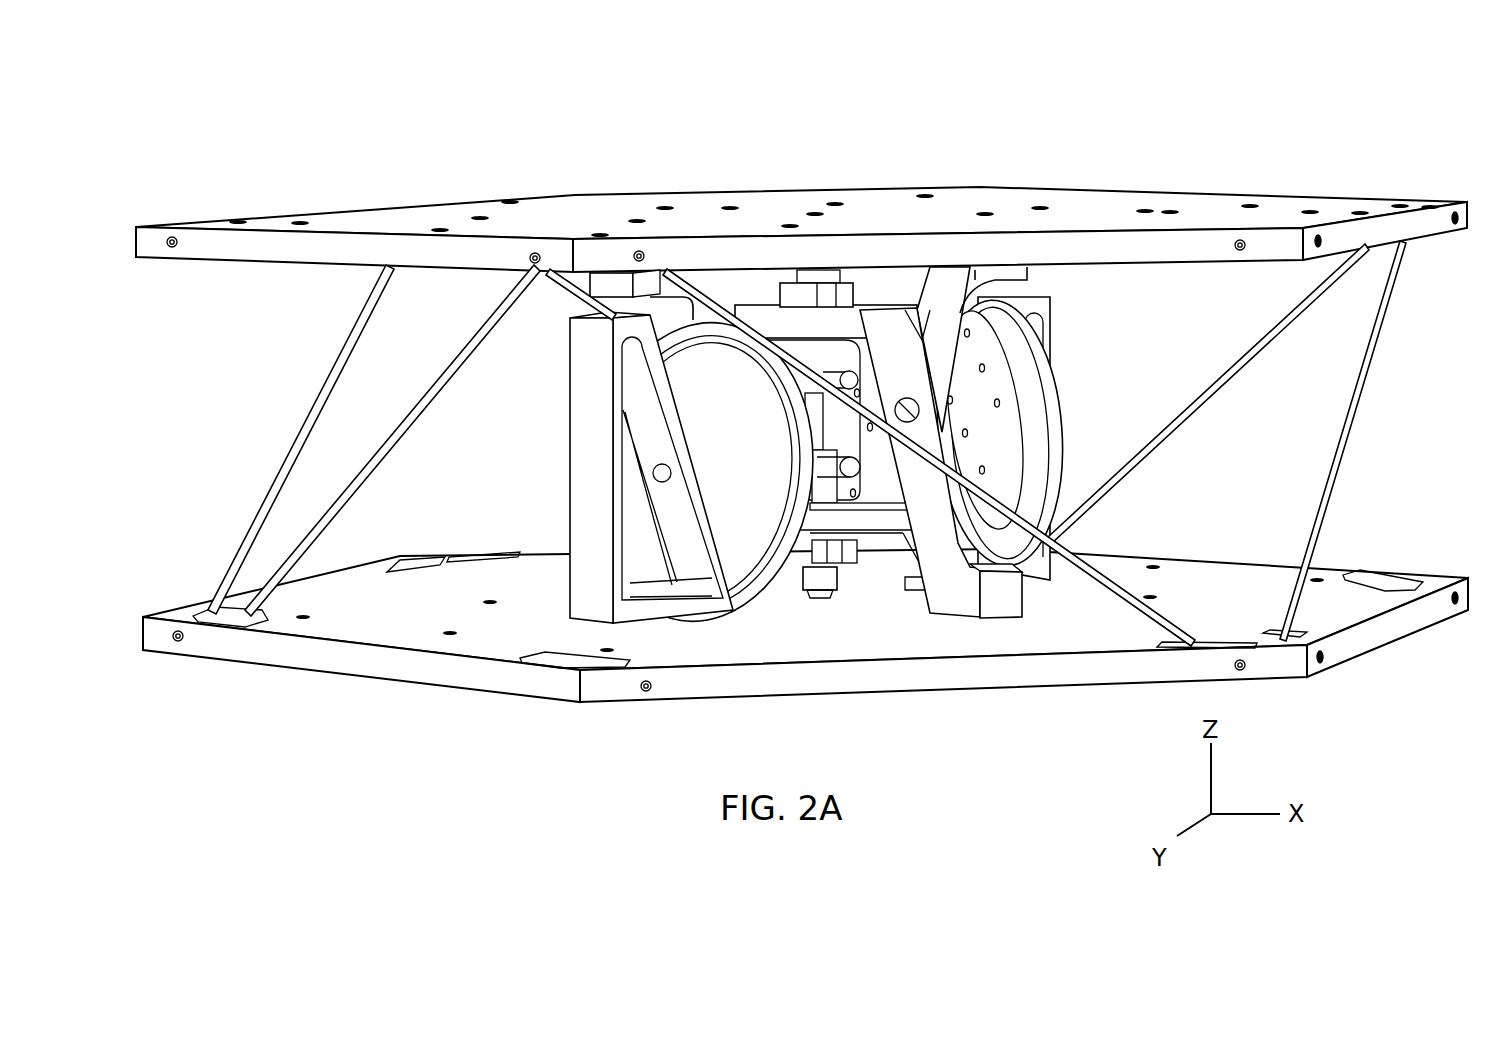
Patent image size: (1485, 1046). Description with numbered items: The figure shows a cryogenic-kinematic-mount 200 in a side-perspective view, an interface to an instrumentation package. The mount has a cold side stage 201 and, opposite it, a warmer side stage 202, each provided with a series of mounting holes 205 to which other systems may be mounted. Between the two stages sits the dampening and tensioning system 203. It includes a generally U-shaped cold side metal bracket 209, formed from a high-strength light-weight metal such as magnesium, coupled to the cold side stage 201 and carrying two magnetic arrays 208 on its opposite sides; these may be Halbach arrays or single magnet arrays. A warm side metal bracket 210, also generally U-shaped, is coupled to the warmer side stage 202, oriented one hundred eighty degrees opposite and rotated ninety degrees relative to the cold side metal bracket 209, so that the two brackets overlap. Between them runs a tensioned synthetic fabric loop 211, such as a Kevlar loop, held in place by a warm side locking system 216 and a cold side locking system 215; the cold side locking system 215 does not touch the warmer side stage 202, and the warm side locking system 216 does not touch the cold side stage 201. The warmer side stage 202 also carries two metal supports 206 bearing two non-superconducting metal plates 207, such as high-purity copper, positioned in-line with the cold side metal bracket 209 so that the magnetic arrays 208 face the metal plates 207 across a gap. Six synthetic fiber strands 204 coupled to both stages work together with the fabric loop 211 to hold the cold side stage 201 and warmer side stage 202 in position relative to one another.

The cryogenic-kinematic-mount 200 is at (783, 405).
The cold side stage 201 is at (351, 208).
The warmer side stage 202 is at (805, 629).
The dampening and tensioning system 203 is at (787, 443).
The synthetic fiber strands 204 is at (507, 296).
The mounting holes 205 is at (1336, 566).
The metal supports 206 is at (821, 459).
The metal plates 207 is at (841, 475).
The magnetic arrays 208 is at (1036, 446).
The cold side metal bracket 209 is at (639, 268).
The warm side metal bracket 210 is at (1010, 598).
The tensioned synthetic fabric loop 211 is at (788, 381).
The cold side locking system 215 is at (832, 613).
The warm side locking system 216 is at (849, 277).